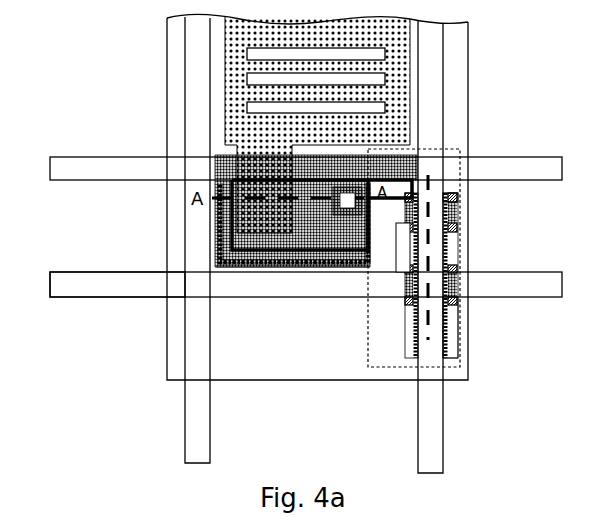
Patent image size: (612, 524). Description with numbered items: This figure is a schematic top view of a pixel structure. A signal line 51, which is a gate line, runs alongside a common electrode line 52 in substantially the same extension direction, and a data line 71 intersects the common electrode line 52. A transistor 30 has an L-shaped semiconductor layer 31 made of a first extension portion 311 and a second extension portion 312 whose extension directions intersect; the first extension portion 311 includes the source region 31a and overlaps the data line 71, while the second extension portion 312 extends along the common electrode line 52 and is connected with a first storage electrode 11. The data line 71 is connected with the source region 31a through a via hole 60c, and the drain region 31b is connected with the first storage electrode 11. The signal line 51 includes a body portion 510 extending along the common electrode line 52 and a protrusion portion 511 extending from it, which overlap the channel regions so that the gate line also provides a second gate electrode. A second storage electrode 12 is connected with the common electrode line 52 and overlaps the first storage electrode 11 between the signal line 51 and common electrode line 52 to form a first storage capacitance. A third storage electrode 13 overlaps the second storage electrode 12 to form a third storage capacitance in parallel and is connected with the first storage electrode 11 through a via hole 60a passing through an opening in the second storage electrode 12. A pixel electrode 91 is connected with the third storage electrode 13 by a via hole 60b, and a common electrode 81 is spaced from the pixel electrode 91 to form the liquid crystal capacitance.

The first storage electrode 11 is at (218, 255).
The second storage electrode 12 is at (220, 243).
The third storage electrode 13 is at (272, 257).
The transistor 30 is at (458, 368).
The semiconductor layer 31 is at (487, 271).
The first extension portion 311 is at (460, 254).
The second extension portion 312 is at (403, 188).
The source region 31a is at (448, 333).
The drain region 31b is at (450, 190).
The signal line 51 is at (74, 306).
The body portion 510 is at (155, 283).
The protrusion portion 511 is at (387, 236).
The common electrode line 52 is at (102, 170).
The via hole 60a is at (345, 212).
The via hole 60b is at (243, 215).
The via hole 60c is at (435, 338).
The data line 71 is at (192, 46).
The common electrode 81 is at (468, 130).
The pixel electrode 91 is at (410, 98).